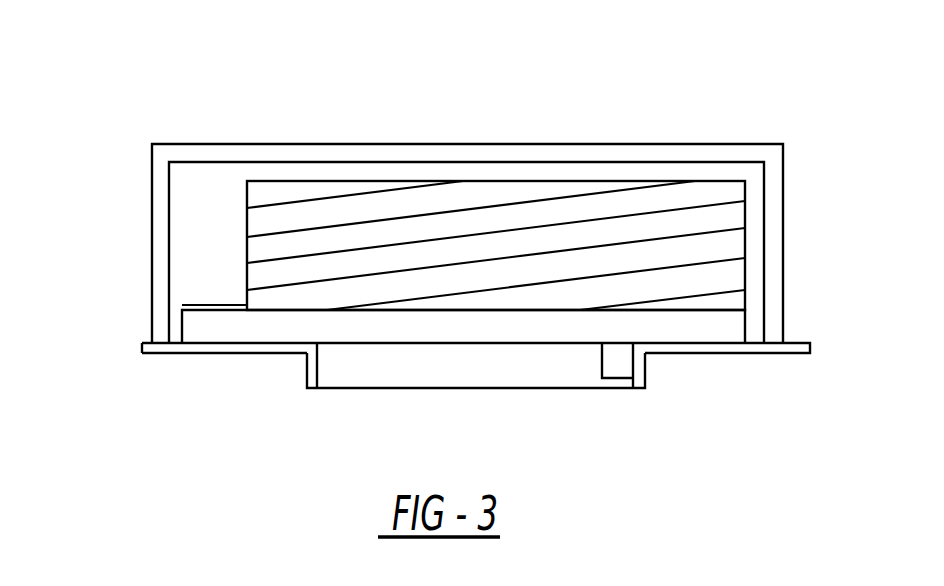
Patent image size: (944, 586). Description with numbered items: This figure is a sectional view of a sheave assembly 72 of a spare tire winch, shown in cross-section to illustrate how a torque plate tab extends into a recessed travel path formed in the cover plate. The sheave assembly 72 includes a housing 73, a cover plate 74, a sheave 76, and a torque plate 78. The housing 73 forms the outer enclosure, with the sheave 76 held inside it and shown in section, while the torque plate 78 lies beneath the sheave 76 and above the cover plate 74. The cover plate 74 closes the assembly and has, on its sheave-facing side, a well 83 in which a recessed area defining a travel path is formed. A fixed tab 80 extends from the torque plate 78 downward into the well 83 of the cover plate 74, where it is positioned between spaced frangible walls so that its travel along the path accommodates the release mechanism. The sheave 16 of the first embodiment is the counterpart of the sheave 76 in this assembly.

The sheave assembly 72 is at (274, 128).
The housing 73 is at (208, 215).
The sheave 16 is at (552, 190).
The sheave 76 is at (603, 220).
The torque plate 78 is at (732, 327).
The cover plate 74 is at (228, 353).
The well 83 is at (310, 388).
The fixed tab 80 is at (613, 365).